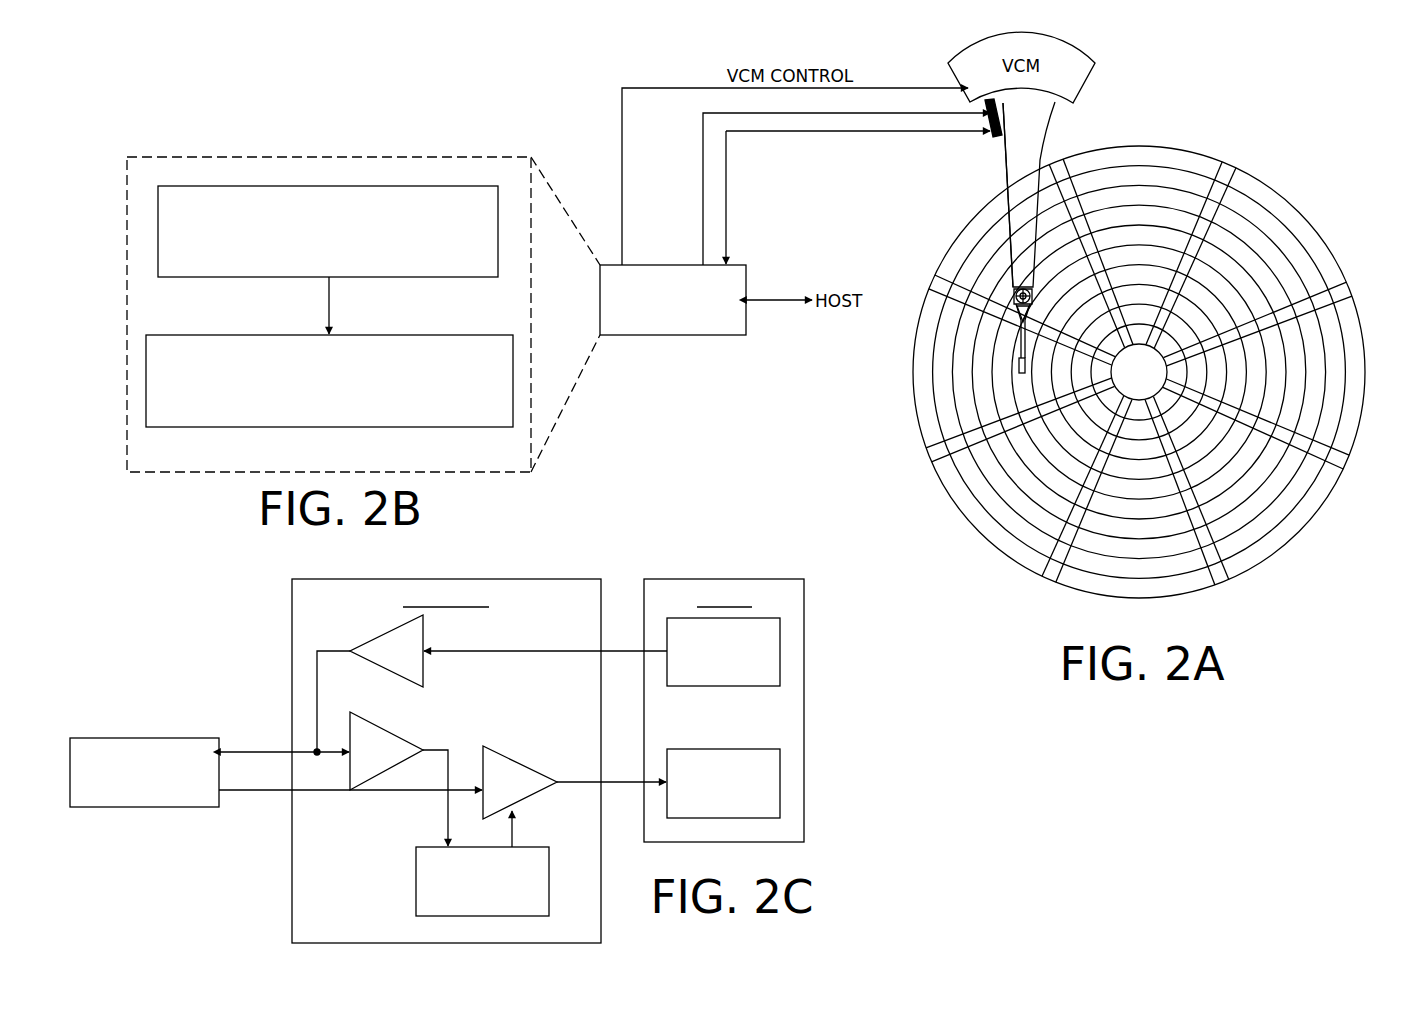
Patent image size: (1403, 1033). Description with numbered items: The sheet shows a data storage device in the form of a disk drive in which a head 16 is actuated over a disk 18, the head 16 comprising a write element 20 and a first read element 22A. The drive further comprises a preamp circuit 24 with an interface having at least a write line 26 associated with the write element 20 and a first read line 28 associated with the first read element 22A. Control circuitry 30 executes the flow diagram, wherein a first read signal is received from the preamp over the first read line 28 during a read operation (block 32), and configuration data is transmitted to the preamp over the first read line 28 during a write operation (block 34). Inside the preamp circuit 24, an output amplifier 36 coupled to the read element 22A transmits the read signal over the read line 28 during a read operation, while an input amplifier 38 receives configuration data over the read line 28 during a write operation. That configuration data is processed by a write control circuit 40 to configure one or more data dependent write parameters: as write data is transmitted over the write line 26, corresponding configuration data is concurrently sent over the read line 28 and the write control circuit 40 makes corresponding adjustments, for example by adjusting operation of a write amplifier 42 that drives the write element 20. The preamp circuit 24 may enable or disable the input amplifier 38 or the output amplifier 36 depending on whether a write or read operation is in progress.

In FIG. 2A, the head 16 is at (1016, 375).
In FIG. 2C, the head 16 is at (724, 578).
In FIG. 2A, the disk 18 is at (1298, 193).
In FIG. 2C, the write element 20 is at (755, 748).
In FIG. 2C, the first read element 22A is at (690, 687).
In FIG. 2A, the preamp circuit 24 is at (990, 136).
In FIG. 2C, the preamp circuit 24 is at (493, 578).
In FIG. 2A, the write line 26 is at (703, 179).
In FIG. 2C, the write line 26 is at (246, 792).
In FIG. 2A, the first read line 28 is at (726, 180).
In FIG. 2C, the first read line 28 is at (247, 749).
In FIG. 2A, the control circuitry 30 is at (673, 336).
In FIG. 2C, the control circuitry 30 is at (145, 808).
In FIG. 2B, the block 32 is at (458, 278).
In FIG. 2B, the block 34 is at (465, 428).
In FIG. 2C, the output amplifier 36 is at (383, 630).
In FIG. 2C, the input amplifier 38 is at (381, 723).
In FIG. 2C, the write control circuit 40 is at (416, 883).
In FIG. 2C, the write amplifier 42 is at (510, 758).